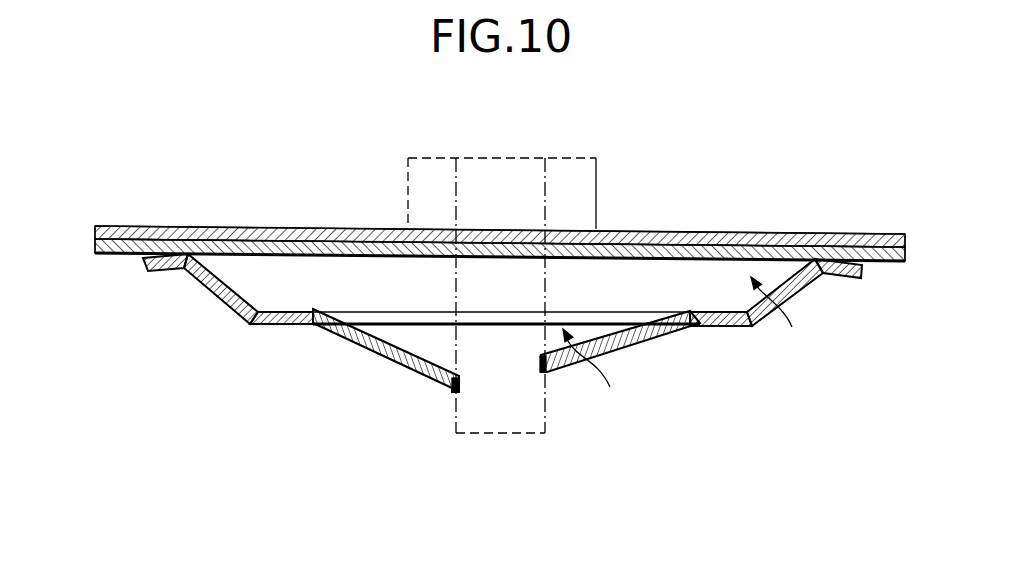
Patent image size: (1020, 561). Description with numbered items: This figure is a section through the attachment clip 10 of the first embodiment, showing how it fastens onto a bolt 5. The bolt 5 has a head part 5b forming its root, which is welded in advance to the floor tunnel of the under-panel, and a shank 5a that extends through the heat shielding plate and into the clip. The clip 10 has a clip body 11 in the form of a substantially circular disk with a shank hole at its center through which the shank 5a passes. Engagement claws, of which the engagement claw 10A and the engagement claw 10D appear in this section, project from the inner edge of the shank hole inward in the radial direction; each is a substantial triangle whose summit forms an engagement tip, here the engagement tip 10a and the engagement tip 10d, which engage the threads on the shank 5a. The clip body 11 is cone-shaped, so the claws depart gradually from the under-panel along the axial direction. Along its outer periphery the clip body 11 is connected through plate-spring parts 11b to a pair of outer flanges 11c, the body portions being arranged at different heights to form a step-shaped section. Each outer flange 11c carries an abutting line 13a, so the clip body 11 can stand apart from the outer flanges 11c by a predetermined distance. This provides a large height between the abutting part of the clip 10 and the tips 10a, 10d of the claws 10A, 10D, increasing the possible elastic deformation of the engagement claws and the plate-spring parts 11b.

The bolt 5 is at (562, 308).
The shank 5a is at (497, 433).
The head part 5b is at (596, 177).
The attachment clip 10 is at (561, 404).
The engagement claw 10A is at (630, 352).
The engagement tip 10a is at (545, 368).
The engagement claw 10D is at (360, 356).
The engagement tip 10d is at (457, 390).
The clip body 11 is at (500, 288).
The plate-spring part 11b is at (212, 293).
The outer flange 11c is at (140, 258).
The abutting line 13a is at (181, 253).